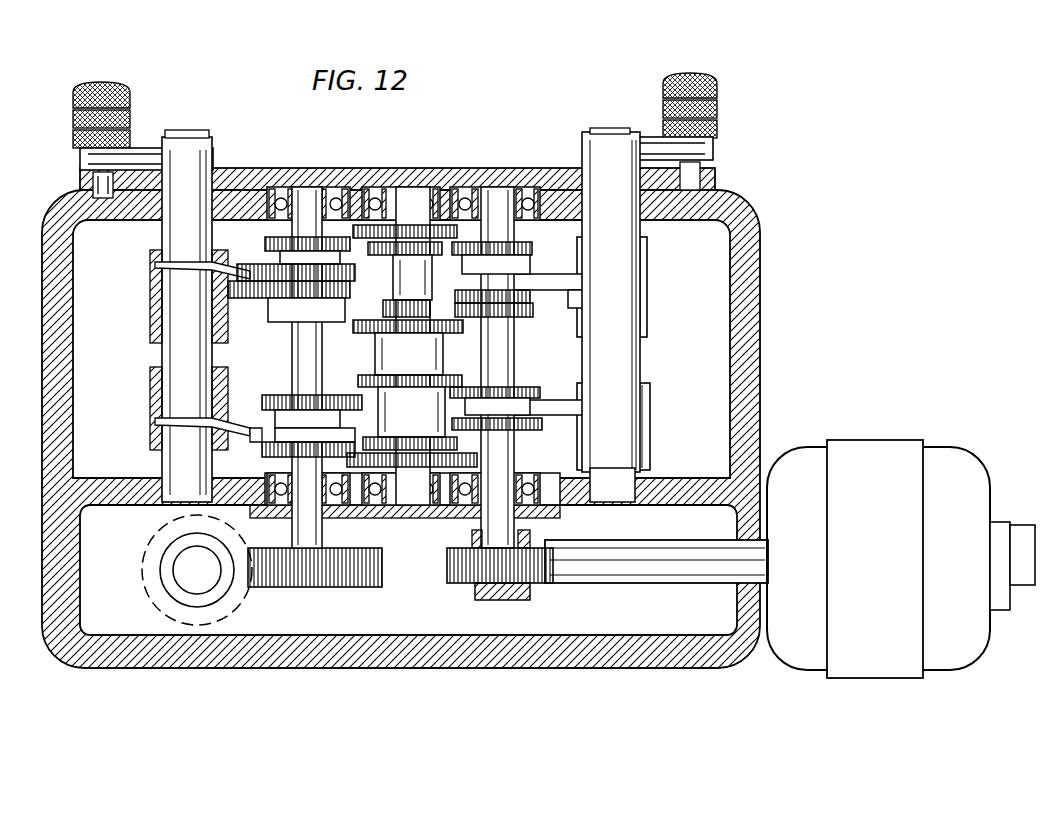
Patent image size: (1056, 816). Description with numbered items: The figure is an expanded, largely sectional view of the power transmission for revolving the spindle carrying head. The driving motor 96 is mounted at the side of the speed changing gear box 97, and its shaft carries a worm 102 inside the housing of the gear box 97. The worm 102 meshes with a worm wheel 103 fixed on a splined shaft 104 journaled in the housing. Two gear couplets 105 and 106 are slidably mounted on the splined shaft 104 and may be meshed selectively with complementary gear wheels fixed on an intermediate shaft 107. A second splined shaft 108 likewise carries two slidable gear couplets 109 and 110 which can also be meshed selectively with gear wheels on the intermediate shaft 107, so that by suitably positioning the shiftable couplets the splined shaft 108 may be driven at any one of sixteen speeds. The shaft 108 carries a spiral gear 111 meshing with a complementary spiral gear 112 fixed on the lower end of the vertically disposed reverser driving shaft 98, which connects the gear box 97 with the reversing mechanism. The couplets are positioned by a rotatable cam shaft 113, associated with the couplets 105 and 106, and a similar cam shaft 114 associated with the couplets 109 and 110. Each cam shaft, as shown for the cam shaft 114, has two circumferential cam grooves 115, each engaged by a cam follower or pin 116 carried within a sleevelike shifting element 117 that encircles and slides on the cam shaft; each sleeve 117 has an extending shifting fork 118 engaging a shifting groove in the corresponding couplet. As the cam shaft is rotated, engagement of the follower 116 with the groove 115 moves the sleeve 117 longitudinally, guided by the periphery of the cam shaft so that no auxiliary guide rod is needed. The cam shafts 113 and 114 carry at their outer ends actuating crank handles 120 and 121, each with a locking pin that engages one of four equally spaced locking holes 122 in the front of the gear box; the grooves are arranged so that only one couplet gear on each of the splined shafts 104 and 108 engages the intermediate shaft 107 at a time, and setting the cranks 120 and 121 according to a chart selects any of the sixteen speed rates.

The driving motor 96 is at (870, 447).
The speed changing gear box 97 is at (752, 207).
The reverser driving shaft 98 is at (185, 572).
The worm 102 is at (492, 600).
The worm wheel 103 is at (455, 572).
The splined shaft 104 is at (500, 465).
The gear couplet 105 is at (538, 384).
The gear couplet 106 is at (529, 327).
The intermediate shaft 107 is at (405, 292).
The second splined shaft 108 is at (300, 345).
The gear couplet 109 is at (344, 388).
The gear couplet 110 is at (253, 314).
The spiral gear 111 is at (345, 548).
The spiral gear 112 is at (165, 542).
The cam shaft 113 is at (646, 347).
The cam shaft 114 is at (180, 237).
The cam groove 115 is at (157, 266).
The cam follower 116 is at (228, 436).
The sleevelike shifting element 117 is at (152, 314).
The shifting fork 118 is at (253, 252).
The crank handle 120 is at (663, 88).
The crank handle 121 is at (73, 97).
The locking hole 122 is at (108, 198).